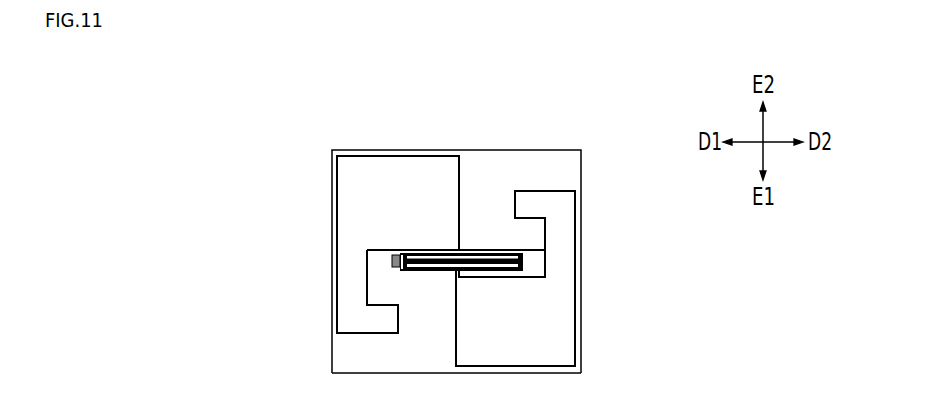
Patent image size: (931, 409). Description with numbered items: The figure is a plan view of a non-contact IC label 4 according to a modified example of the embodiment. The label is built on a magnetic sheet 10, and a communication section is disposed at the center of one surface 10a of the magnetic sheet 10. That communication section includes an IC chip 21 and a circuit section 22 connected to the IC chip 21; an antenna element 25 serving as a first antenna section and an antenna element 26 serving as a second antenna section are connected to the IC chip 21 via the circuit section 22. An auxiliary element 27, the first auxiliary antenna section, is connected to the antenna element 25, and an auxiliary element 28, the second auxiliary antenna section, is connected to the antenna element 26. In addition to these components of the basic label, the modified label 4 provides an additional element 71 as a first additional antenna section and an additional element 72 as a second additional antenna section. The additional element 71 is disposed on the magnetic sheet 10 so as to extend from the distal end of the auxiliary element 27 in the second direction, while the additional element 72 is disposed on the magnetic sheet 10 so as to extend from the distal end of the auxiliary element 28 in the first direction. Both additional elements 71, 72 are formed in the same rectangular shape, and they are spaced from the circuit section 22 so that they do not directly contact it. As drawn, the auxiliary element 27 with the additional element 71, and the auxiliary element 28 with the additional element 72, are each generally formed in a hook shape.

The non-contact IC label 4 is at (332, 150).
The magnetic sheet 10 is at (332, 365).
The one surface 10a is at (350, 355).
The IC chip 21 is at (393, 262).
The circuit section 22 is at (493, 250).
The antenna element 25 is at (355, 199).
The antenna element 26 is at (555, 320).
The auxiliary element 27 is at (355, 275).
The auxiliary element 28 is at (568, 242).
The additional element 71 is at (385, 320).
The additional element 72 is at (530, 202).